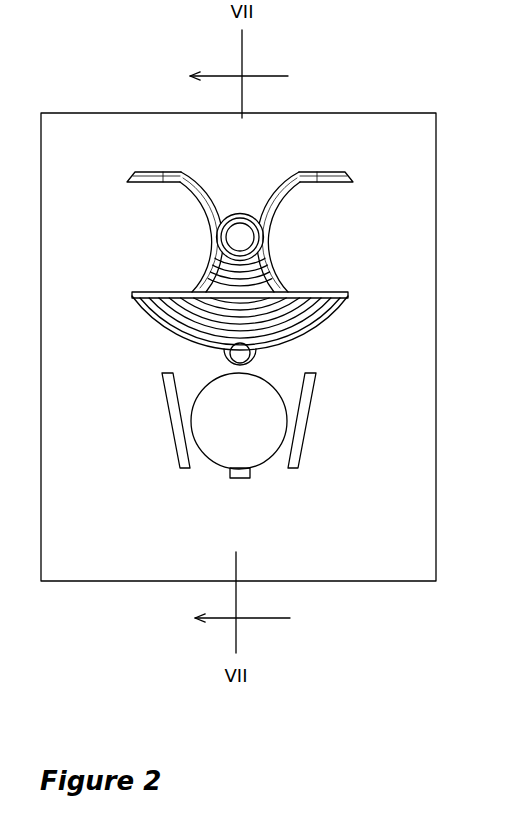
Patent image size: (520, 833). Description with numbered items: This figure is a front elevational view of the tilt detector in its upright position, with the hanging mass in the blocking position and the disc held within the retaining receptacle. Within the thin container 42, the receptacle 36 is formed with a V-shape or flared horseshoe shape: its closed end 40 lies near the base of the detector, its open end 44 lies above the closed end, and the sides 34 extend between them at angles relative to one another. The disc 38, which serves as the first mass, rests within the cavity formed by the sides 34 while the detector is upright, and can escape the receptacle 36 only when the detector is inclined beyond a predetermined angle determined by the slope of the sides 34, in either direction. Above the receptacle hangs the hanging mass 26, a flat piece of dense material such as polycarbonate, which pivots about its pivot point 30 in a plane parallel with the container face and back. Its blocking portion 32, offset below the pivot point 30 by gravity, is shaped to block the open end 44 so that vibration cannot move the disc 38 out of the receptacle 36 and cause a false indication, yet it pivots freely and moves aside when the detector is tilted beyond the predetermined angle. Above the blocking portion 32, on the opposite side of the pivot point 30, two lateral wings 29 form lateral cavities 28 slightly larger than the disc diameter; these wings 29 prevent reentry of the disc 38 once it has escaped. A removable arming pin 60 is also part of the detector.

The hanging mass 26 is at (274, 158).
The lateral cavities 28 is at (298, 213).
The lateral wings 29 is at (179, 175).
The pivot point 30 is at (240, 237).
The blocking portion 32 is at (238, 352).
The sides 34 is at (318, 385).
The receptacle 36 is at (285, 534).
The disc 38 is at (250, 428).
The closed end 40 is at (240, 473).
The container 42 is at (258, 590).
The open end 44 is at (274, 291).
The arming pin 60 is at (312, 329).